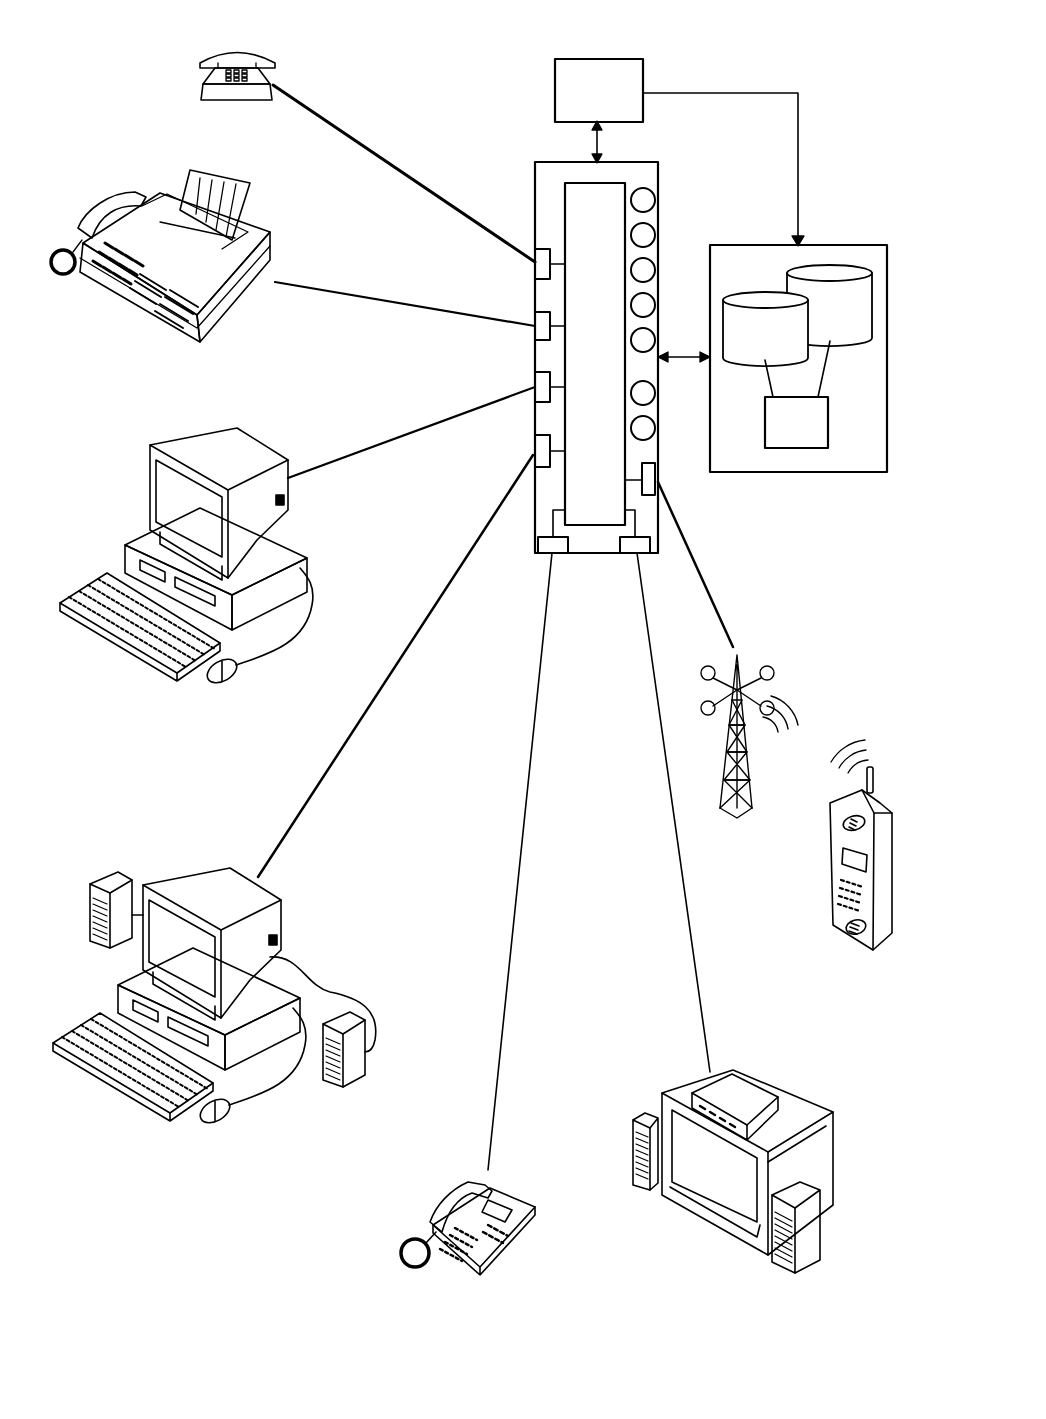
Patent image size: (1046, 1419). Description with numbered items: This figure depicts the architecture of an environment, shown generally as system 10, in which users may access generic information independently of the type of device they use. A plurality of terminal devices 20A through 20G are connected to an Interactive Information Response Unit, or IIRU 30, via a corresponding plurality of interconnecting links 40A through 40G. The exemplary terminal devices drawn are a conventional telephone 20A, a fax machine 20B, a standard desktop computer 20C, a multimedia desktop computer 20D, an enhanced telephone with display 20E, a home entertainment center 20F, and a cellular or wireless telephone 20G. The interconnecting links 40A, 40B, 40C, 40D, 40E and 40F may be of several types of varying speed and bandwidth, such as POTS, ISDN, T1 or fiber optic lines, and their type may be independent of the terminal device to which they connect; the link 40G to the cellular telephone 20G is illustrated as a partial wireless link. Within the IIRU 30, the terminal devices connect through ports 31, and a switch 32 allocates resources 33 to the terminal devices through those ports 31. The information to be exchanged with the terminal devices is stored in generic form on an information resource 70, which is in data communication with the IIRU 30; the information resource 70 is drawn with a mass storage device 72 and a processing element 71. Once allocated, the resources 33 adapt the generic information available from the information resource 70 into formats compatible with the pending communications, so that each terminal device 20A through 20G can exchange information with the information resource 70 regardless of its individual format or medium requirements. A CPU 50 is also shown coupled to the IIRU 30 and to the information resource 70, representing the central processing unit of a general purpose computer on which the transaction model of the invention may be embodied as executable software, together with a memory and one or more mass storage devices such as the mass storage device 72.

The communication system 10 is at (433, 62).
The conventional telephone 20A is at (238, 50).
The fax machine 20B is at (128, 303).
The standard desktop computer 20C is at (124, 552).
The multimedia desktop computer 20D is at (117, 992).
The enhanced telephone with display 20E is at (445, 1203).
The home entertainment center 20F is at (698, 1212).
The cellular/wireless telephone 20G is at (848, 938).
The Interactive Information Response Unit (IIRU) 30 is at (535, 181).
The ports 31 is at (533, 271).
The switch 32 is at (595, 354).
The resources 33 is at (652, 203).
The interconnecting link 40A is at (360, 140).
The interconnecting link 40B is at (330, 288).
The interconnecting link 40C is at (403, 443).
The interconnecting link 40D is at (345, 747).
The interconnecting link 40E is at (500, 1110).
The interconnecting link 40F is at (697, 975).
The partial wireless link 40G is at (713, 596).
The CPU 50 is at (555, 88).
The information resource 70 is at (847, 245).
The DSP digital signal processor 71 is at (828, 420).
The mass storage device 72 is at (742, 360).